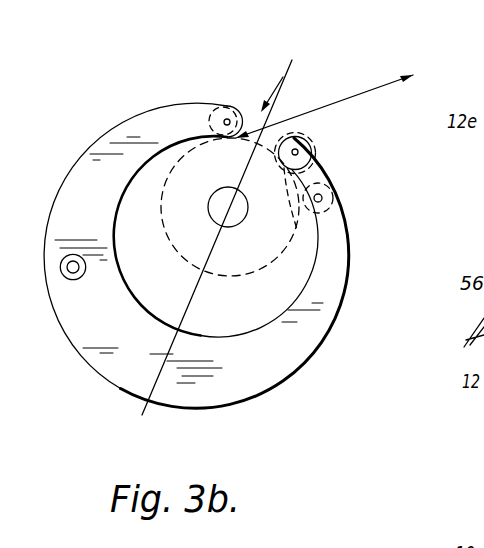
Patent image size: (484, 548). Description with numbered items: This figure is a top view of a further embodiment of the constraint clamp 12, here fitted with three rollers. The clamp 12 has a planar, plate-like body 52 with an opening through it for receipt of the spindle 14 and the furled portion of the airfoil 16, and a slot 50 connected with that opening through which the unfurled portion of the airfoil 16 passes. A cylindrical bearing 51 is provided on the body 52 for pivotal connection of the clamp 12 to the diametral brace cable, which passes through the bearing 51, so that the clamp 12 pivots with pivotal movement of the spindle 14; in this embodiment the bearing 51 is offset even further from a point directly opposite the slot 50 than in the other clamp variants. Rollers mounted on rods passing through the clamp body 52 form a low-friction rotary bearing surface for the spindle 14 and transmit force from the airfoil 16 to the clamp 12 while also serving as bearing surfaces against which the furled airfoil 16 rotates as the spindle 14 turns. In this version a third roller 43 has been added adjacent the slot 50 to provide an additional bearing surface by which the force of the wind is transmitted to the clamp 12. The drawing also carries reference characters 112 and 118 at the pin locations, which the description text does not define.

The constraint clamp 12 is at (284, 393).
The spindle 14 is at (237, 217).
The airfoil 16 is at (374, 88).
The third roller 43 is at (333, 204).
The slot 50 is at (230, 230).
The cylindrical bearing 51 is at (68, 280).
The plate-like body 52 is at (147, 359).
The pin clearance circle 112 is at (232, 103).
The pivot pin 118 is at (225, 120).